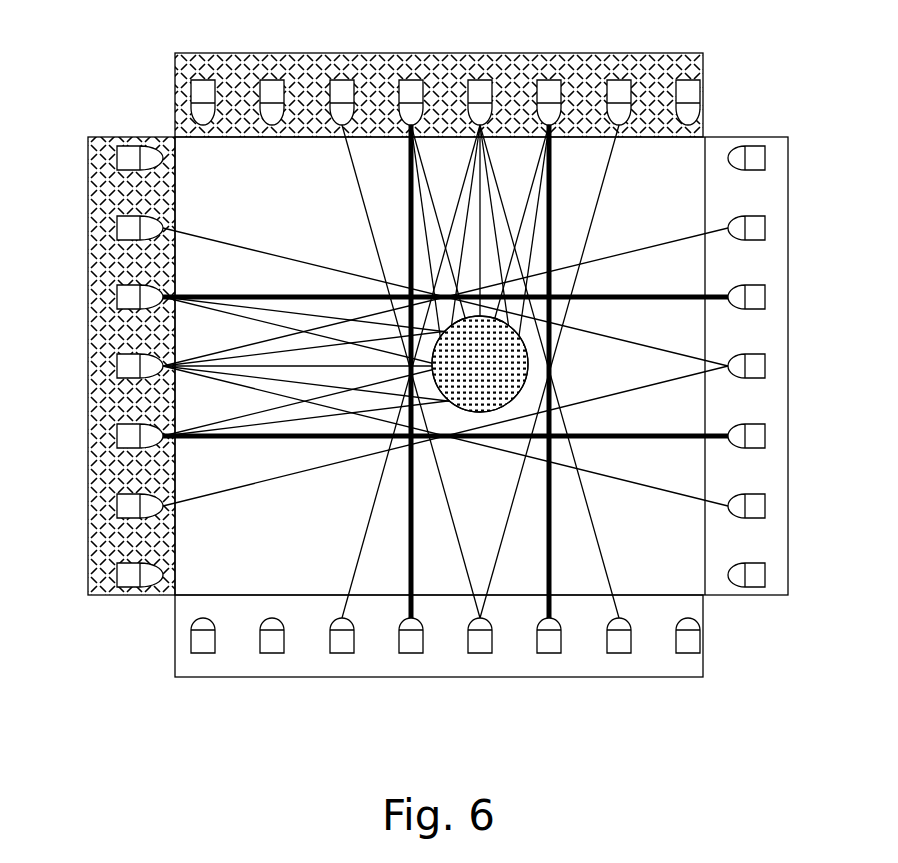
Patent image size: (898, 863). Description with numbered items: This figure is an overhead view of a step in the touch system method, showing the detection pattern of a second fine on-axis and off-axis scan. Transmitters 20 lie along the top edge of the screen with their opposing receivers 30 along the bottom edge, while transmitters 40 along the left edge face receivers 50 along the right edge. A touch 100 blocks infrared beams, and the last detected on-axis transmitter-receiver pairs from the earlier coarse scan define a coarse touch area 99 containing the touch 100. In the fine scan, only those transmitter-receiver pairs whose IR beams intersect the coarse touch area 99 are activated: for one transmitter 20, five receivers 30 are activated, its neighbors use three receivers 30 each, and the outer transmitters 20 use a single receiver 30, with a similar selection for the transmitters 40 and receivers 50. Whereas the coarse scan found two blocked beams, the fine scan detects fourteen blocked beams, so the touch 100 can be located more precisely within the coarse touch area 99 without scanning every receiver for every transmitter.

The x-axis transmitters 20 is at (445, 75).
The x-axis receivers 30 is at (442, 669).
The y-axis transmitters 40 is at (96, 366).
The y-axis receivers 50 is at (798, 367).
The touch 100 is at (484, 358).
The coarse touch area 99 is at (540, 414).